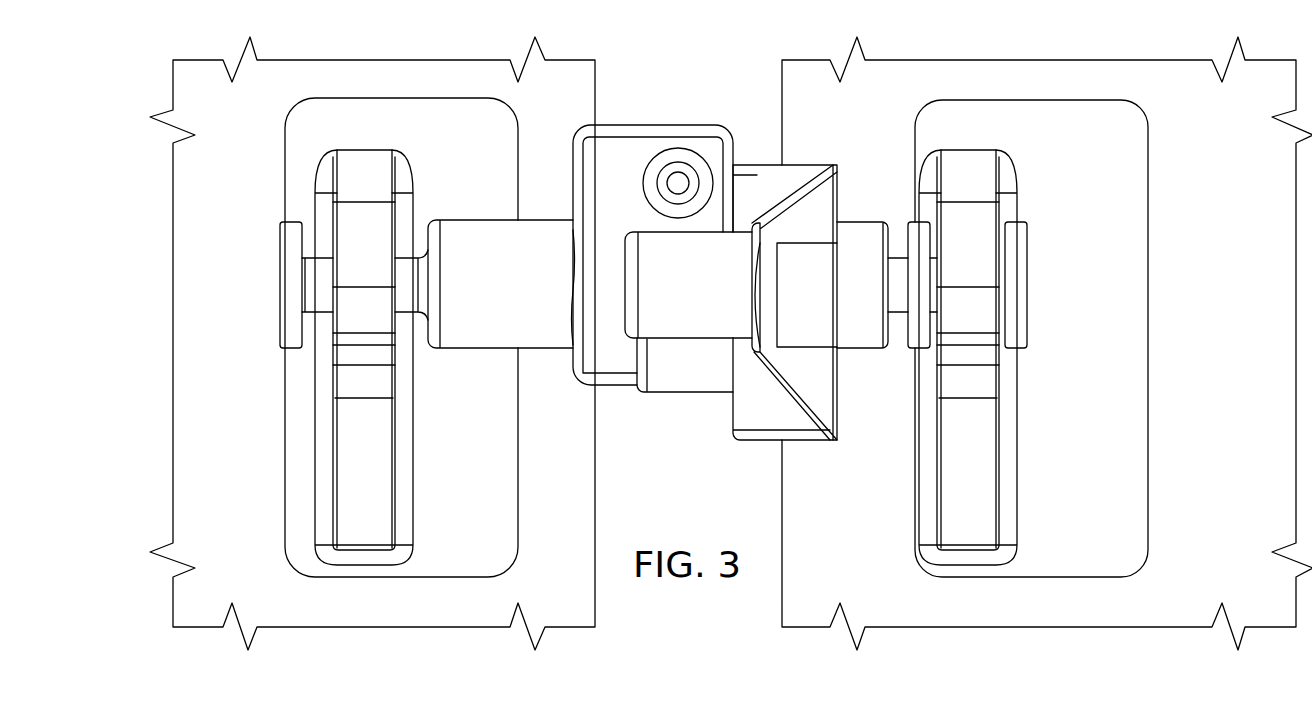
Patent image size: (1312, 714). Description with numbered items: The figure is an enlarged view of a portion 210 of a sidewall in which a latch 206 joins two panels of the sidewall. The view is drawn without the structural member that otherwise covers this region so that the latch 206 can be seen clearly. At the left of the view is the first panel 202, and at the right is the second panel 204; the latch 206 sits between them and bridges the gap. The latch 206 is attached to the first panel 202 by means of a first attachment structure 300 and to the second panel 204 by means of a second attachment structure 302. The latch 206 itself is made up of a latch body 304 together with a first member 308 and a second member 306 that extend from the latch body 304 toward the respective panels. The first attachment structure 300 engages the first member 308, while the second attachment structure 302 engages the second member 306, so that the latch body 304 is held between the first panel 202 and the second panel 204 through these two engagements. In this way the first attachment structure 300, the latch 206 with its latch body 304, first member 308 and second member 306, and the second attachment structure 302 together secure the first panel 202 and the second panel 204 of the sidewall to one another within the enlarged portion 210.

The first panel 202 is at (805, 68).
The second panel 204 is at (382, 68).
The latch 206 is at (665, 122).
The portion 210 is at (1038, 60).
The first attachment structure 300 is at (1127, 512).
The second attachment structure 302 is at (498, 510).
The latch body 304 is at (685, 393).
The second member 306 is at (313, 256).
The first member 308 is at (902, 240).